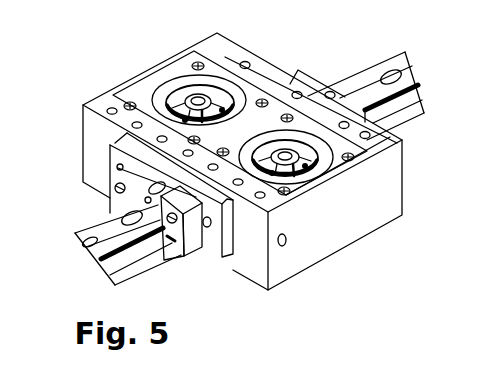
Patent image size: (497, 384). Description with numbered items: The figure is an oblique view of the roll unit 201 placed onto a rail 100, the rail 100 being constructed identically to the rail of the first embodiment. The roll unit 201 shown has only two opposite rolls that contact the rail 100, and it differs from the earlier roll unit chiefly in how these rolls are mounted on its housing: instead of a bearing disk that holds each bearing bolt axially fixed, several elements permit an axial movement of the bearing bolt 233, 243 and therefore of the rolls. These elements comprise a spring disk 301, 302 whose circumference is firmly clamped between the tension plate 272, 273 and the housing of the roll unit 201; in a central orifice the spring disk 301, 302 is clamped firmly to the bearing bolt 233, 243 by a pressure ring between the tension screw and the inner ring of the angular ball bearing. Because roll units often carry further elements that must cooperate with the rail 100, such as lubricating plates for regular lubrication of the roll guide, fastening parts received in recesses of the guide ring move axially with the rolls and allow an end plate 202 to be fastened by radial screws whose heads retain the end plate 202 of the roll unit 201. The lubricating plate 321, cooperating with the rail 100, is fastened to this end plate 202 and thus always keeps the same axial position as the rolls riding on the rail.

The rail 100 is at (408, 106).
The roll unit 201 is at (332, 237).
The end plate 202 is at (205, 262).
The bearing bolt 233 is at (198, 100).
The bearing bolt 243 is at (283, 150).
The tension plate 272 is at (150, 84).
The tension plate 273 is at (318, 150).
The spring disk 301 is at (233, 97).
The spring disk 302 is at (340, 120).
The lubricating plate 321 is at (112, 203).